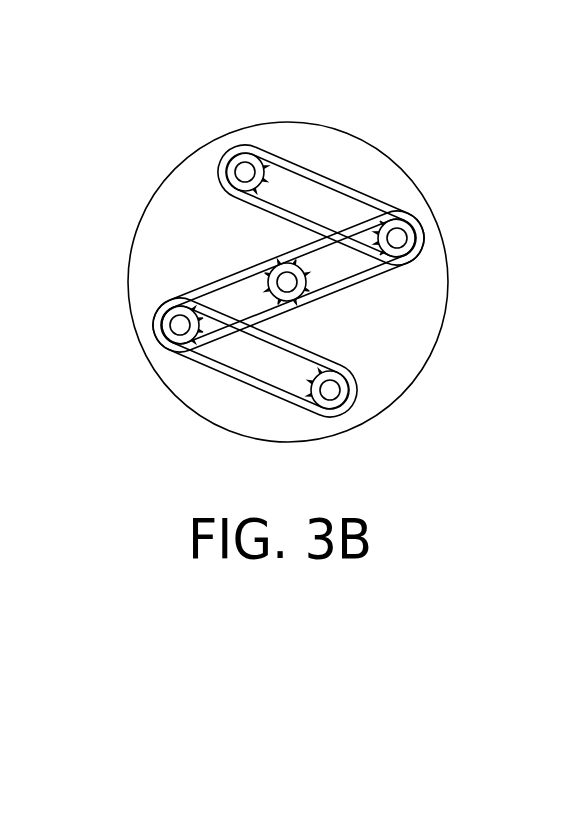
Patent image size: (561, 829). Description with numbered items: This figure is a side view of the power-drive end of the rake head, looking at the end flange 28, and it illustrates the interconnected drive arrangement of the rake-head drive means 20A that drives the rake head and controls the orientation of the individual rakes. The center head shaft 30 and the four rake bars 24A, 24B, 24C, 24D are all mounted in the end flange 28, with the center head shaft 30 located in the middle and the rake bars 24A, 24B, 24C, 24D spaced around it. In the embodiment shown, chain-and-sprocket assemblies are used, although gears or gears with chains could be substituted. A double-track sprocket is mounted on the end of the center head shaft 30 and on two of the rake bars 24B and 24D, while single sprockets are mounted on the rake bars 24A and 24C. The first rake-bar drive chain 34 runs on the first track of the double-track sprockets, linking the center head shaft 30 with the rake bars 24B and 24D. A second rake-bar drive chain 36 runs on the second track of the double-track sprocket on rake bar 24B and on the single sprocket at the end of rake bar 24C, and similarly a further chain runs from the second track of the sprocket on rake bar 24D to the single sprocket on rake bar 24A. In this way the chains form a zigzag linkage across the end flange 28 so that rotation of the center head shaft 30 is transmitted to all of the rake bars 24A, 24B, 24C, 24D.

The rake-head drive means 20A is at (289, 274).
The rake bar 24A is at (242, 156).
The rake bar 24B is at (398, 240).
The rake bar 24C is at (332, 390).
The rake bar 24D is at (180, 326).
The end flange 28 is at (298, 137).
The center head shaft 30 is at (283, 276).
The first rake-bar drive chain 34 is at (390, 267).
The second rake-bar drive chain 36 is at (336, 176).